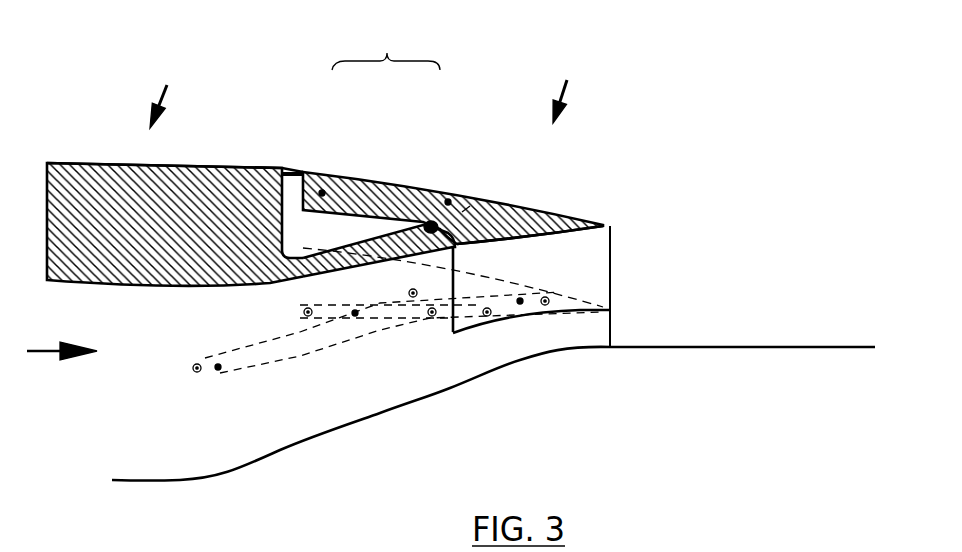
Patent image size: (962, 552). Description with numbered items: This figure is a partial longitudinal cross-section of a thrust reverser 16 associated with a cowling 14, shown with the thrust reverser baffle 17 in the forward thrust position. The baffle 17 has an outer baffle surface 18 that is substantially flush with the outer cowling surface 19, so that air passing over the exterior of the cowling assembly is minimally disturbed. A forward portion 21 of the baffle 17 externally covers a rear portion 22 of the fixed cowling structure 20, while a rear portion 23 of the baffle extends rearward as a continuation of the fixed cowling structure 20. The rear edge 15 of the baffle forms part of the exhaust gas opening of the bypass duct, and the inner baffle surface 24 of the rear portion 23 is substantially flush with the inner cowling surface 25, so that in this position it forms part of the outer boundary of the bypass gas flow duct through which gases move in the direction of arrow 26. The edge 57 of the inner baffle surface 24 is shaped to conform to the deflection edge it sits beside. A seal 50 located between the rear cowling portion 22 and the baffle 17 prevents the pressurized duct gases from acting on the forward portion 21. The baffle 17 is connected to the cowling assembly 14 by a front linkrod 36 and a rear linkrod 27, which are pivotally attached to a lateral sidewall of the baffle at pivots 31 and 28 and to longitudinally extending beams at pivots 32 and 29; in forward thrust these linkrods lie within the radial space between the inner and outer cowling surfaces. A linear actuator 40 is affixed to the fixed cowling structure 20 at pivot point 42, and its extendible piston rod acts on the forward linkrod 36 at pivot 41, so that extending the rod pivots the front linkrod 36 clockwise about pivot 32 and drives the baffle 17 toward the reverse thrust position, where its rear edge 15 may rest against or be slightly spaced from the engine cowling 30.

The cowling 14 is at (166, 87).
The rear edge 15 is at (632, 226).
The thrust reverser 16 is at (569, 83).
The thrust reverser baffle 17 is at (386, 43).
The outer baffle surface 18 is at (543, 186).
The outer cowling surface 19 is at (207, 143).
The fixed cowling structure 20 is at (112, 210).
The forward portion 21 is at (322, 193).
The rear portion 22 is at (313, 277).
The rear portion 23 is at (448, 202).
The inner baffle surface 24 is at (578, 251).
The inner cowling surface 25 is at (390, 286).
The arrow 26 is at (62, 335).
The rear linkrod 27 is at (520, 304).
The pivot 28 is at (432, 316).
The pivot 29 is at (575, 310).
The engine cowling 30 is at (768, 364).
The pivot 31 is at (308, 318).
The pivot 32 is at (487, 316).
The front linkrod 36 is at (355, 316).
The linear actuator 40 is at (218, 372).
The pivot 41 is at (413, 297).
The pivot point 42 is at (193, 368).
The seal 50 is at (462, 212).
The edge 57 is at (475, 258).